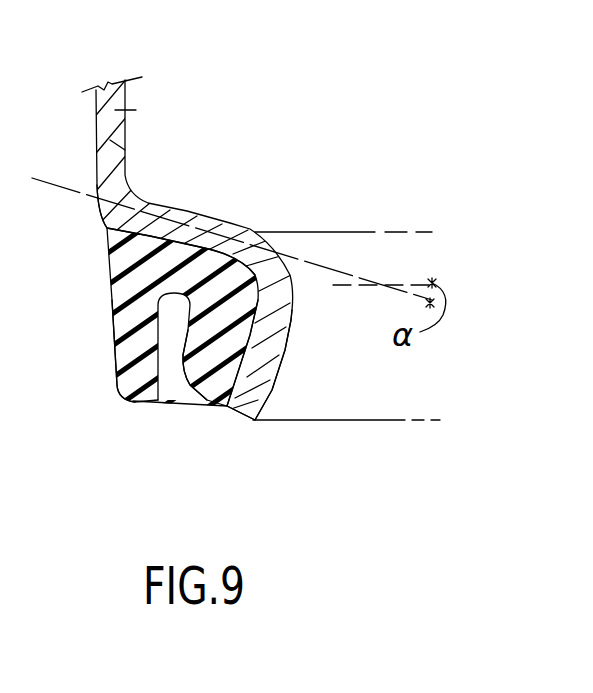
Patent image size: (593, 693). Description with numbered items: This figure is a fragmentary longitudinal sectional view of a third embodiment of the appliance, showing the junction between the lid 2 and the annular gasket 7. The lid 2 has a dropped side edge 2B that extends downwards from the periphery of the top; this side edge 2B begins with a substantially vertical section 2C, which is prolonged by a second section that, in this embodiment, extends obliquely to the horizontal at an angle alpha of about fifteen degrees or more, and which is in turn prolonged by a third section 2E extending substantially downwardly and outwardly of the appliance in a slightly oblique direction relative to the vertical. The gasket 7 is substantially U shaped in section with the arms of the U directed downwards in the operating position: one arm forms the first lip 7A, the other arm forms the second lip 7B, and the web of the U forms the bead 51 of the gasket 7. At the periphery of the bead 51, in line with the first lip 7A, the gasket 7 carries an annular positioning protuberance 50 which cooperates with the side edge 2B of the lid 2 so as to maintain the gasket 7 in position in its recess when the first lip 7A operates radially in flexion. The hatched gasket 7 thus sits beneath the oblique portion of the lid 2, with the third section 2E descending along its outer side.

The lid 2 is at (96, 110).
The dropped side edge 2B is at (125, 153).
The substantially vertical section 2C is at (130, 110).
The third section 2E is at (259, 368).
The annular gasket 7 is at (124, 306).
The first lip 7A is at (124, 383).
The second lip 7B is at (208, 383).
The annular positioning protuberance 50 is at (110, 229).
The bead 51 is at (200, 262).